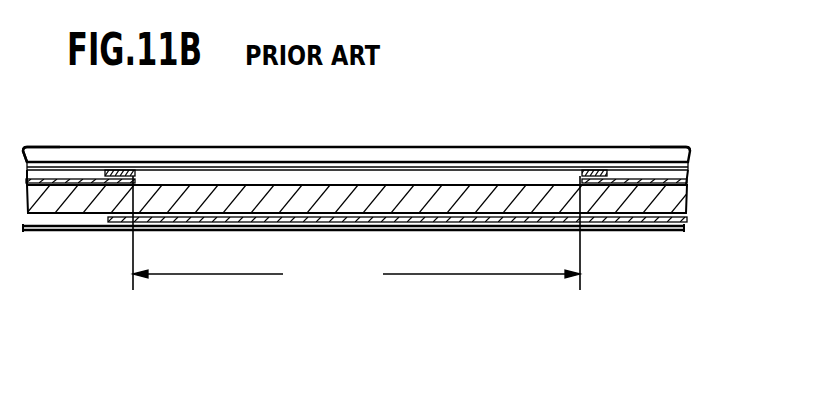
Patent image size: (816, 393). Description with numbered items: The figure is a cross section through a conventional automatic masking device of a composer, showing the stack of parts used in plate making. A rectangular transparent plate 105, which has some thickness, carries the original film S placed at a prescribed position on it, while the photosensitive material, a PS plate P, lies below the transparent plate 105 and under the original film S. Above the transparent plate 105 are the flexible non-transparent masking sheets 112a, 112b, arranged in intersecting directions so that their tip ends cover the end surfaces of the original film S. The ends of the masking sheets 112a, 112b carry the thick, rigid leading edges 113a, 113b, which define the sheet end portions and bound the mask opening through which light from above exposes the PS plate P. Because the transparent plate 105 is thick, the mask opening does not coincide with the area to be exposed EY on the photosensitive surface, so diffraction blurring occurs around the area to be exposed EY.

The masking sheet 112a is at (367, 161).
The masking sheet 112b is at (66, 161).
The leading edge 113a is at (259, 166).
The leading edge 113b is at (127, 170).
The transparent plate 105 is at (526, 192).
The original film S is at (455, 222).
The PS plate P is at (673, 226).
The area to be exposed EY is at (356, 233).